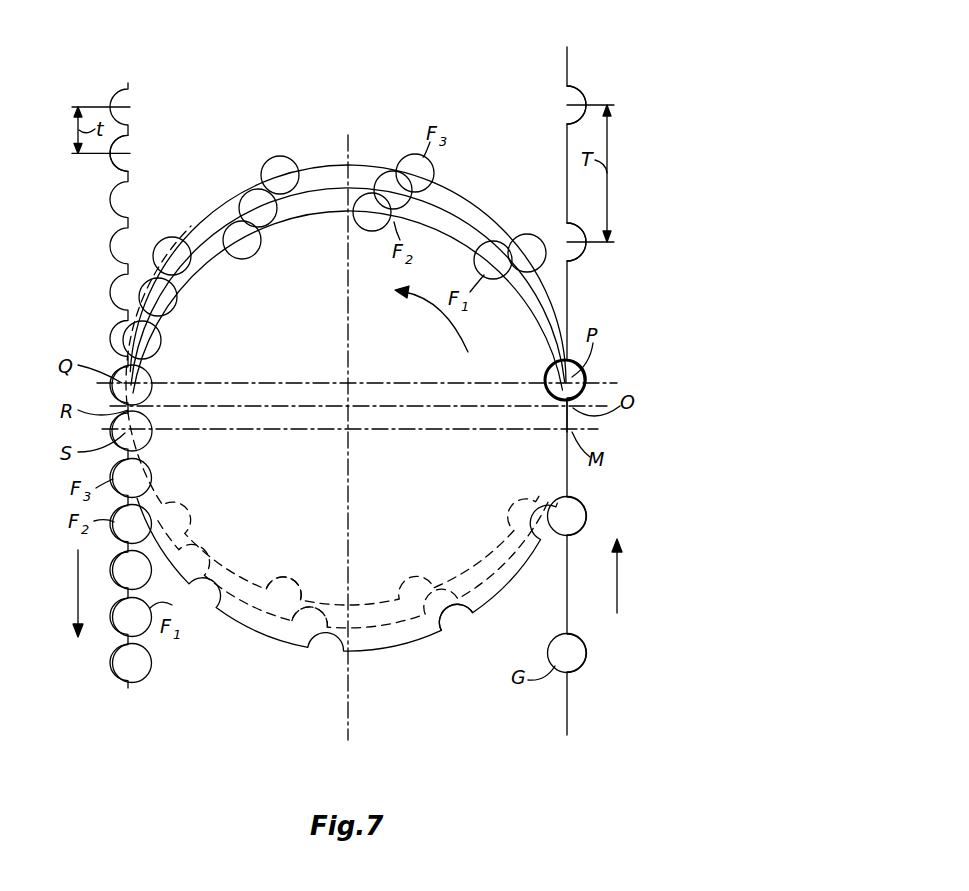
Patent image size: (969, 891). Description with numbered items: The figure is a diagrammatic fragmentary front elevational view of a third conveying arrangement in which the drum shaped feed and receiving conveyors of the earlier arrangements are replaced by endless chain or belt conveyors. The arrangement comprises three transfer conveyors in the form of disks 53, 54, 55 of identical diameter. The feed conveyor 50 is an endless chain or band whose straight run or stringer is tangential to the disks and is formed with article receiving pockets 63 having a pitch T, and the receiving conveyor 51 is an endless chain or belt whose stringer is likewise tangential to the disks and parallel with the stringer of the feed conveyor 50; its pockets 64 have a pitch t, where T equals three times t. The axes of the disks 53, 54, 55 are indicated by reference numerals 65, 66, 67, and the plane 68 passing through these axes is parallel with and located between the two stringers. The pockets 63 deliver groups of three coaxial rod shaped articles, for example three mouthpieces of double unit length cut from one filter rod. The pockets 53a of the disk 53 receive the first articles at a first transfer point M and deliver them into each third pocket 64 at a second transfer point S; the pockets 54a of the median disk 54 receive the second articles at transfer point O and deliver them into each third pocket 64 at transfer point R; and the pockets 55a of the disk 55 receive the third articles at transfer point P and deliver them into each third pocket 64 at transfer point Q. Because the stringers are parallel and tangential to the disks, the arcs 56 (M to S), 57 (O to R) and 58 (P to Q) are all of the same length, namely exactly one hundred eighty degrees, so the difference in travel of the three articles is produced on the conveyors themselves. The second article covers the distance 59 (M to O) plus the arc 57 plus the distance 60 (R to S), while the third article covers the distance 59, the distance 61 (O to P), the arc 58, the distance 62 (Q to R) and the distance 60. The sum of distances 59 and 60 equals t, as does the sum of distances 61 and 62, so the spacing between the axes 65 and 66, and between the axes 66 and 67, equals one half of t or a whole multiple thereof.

The feed conveyor 50 is at (565, 69).
The receiving conveyor 51 is at (126, 88).
The disk 53 is at (394, 650).
The pockets of the disk 53 53a is at (448, 631).
The median disk 54 is at (257, 620).
The pockets of the median disk 54 54a is at (292, 628).
The disk 55 is at (361, 603).
The pockets of the disk 55 55a is at (283, 572).
The arc 56 is at (302, 217).
The arc 57 is at (315, 172).
The arc 58 is at (363, 162).
The distance 59 is at (565, 416).
The distance 60 is at (137, 428).
The distance 61 is at (550, 391).
The distance 62 is at (137, 400).
The article receiving pockets 63 is at (568, 121).
The pockets 64 is at (118, 126).
The axis 65 is at (343, 436).
The axis 66 is at (351, 389).
The axis 67 is at (346, 372).
The plane 68 is at (352, 542).